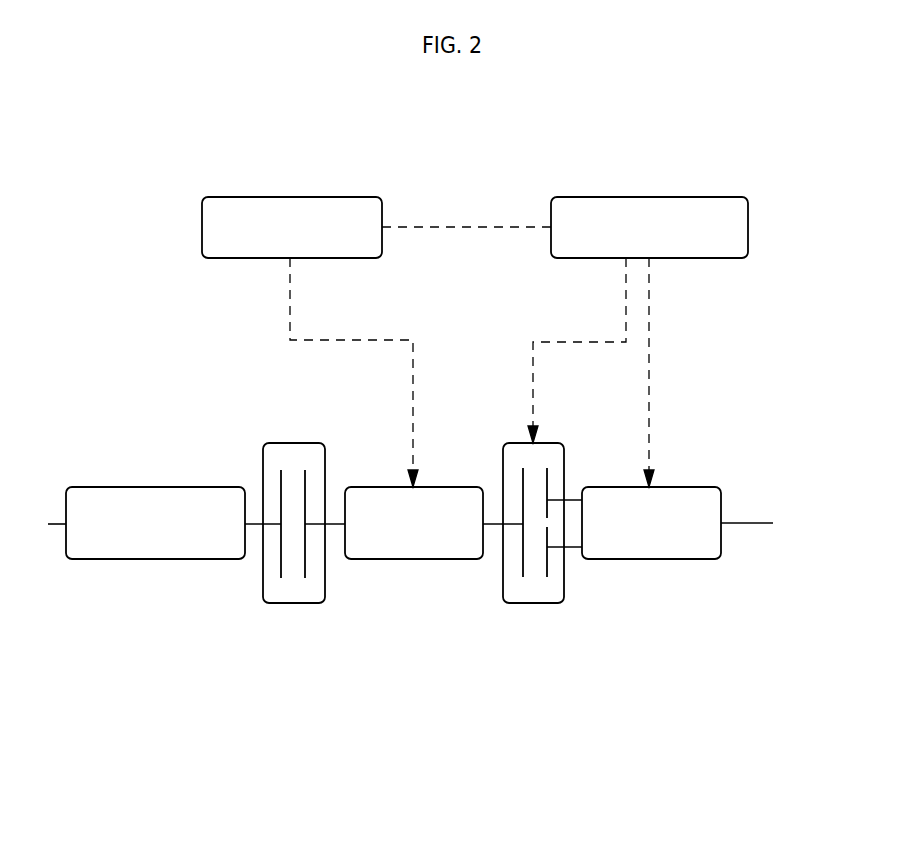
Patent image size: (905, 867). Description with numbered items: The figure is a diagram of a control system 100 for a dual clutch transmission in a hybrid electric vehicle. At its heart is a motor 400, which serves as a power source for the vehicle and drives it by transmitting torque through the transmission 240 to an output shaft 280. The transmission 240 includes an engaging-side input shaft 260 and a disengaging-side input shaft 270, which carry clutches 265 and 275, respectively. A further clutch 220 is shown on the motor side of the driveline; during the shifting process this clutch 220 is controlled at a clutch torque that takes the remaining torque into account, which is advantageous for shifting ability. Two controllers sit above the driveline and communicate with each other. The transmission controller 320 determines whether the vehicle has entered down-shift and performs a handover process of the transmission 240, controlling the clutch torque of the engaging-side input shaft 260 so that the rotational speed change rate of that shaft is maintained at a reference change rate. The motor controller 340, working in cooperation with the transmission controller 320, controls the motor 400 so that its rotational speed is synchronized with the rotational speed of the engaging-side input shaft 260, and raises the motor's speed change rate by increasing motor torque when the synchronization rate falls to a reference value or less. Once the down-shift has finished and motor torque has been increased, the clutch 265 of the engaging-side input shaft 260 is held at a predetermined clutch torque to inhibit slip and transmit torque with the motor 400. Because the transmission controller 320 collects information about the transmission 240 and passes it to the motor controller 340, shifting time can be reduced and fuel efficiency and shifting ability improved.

The control system 100 is at (157, 292).
The motor controller 340 is at (290, 197).
The transmission controller 320 is at (650, 197).
The motor 400 is at (412, 560).
The clutch 220 is at (517, 603).
The clutch 265 is at (547, 496).
The clutch 275 is at (547, 572).
The engaging-side input shaft 260 is at (574, 497).
The disengaging-side input shaft 270 is at (573, 550).
The transmission 240 is at (648, 559).
The output shaft 280 is at (745, 528).